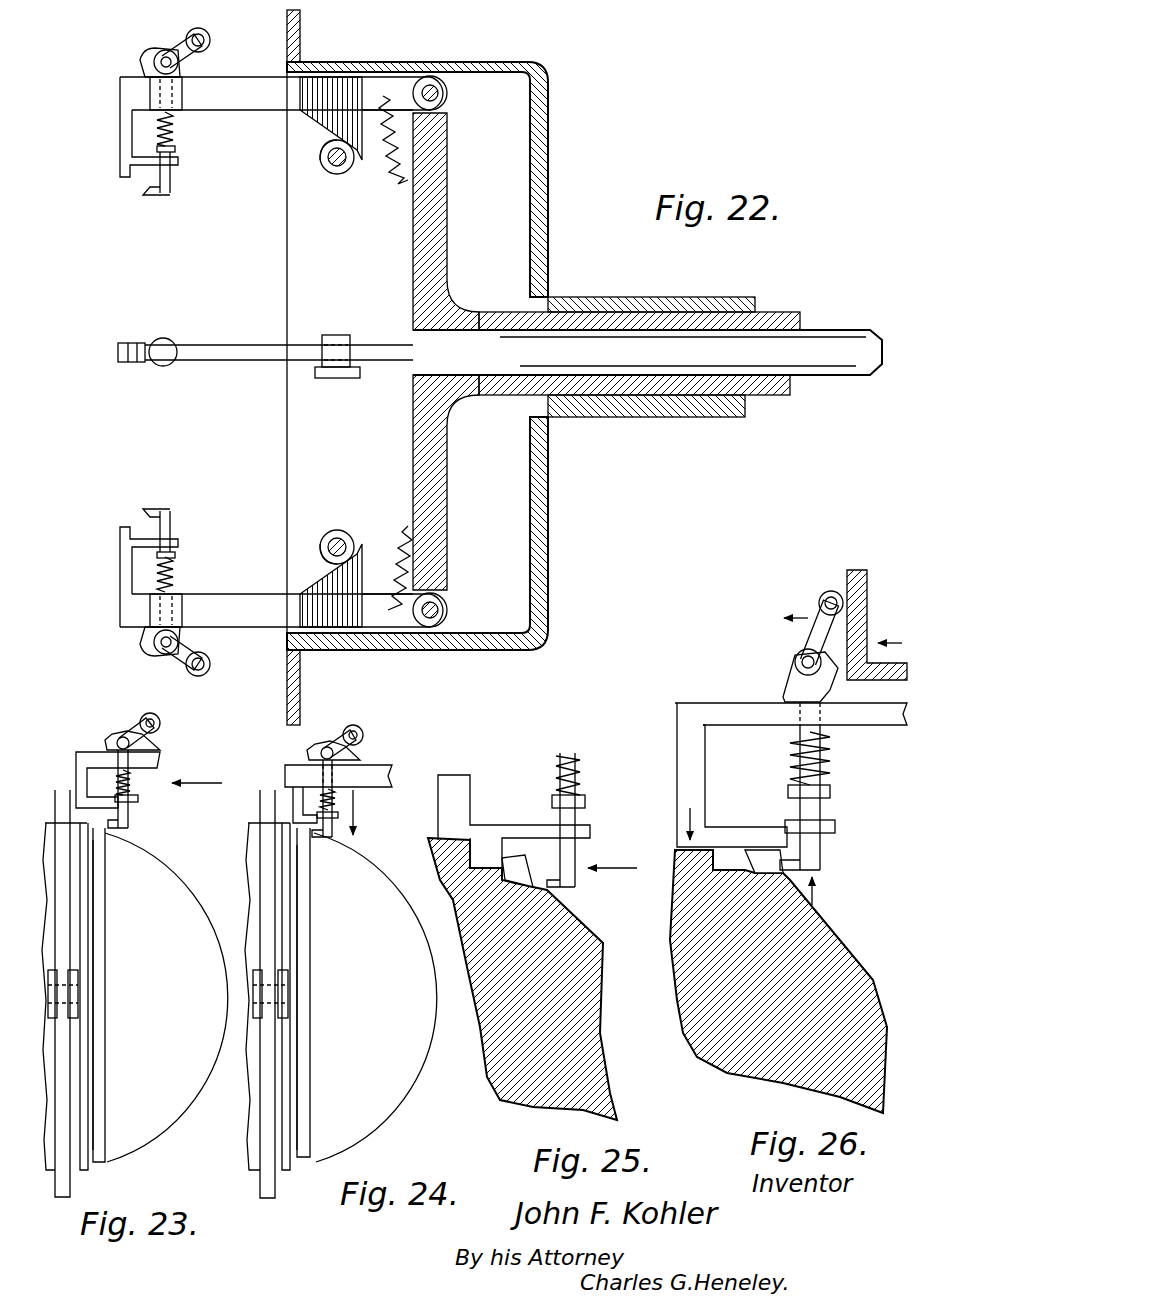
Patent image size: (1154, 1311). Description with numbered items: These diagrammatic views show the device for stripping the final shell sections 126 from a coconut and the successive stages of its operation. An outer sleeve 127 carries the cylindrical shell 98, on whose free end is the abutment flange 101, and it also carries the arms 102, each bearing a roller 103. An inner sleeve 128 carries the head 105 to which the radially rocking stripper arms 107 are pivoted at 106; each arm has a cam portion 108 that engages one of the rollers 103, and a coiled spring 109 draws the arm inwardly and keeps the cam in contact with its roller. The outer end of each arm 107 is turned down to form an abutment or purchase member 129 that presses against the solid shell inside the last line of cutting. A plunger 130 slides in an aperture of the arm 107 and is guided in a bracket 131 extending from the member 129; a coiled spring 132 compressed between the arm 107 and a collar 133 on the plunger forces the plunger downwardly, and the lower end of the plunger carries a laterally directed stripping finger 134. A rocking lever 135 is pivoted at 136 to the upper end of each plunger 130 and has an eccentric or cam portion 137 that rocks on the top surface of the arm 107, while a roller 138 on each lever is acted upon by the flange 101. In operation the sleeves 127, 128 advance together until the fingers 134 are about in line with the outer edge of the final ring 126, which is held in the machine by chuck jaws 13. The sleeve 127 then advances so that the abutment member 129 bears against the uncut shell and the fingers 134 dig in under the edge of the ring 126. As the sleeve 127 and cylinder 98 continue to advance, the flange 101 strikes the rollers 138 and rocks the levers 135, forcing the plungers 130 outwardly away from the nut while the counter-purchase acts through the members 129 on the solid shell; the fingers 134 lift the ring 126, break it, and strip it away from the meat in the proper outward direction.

In FIG. 23, the chuck jaws 13 is at (70, 1077).
In FIG. 24, the chuck jaws 13 is at (270, 876).
In FIG. 25, the chuck jaws 13 is at (522, 979).
In FIG. 26, the chuck jaws 13 is at (778, 981).
In FIG. 22, the cylindrical shell 98 is at (548, 496).
In FIG. 22, the abutment flange 101 is at (300, 36).
In FIG. 26, the abutment flange 101 is at (862, 565).
In FIG. 22, the arms 102 is at (318, 146).
In FIG. 22, the rollers 103 is at (346, 335).
In FIG. 22, the head 105 is at (448, 206).
In FIG. 22, the pivot points 106 is at (447, 96).
In FIG. 22, the stripper arms 107 is at (243, 380).
In FIG. 24, the stripper arms 107 is at (376, 775).
In FIG. 26, the stripper arms 107 is at (791, 715).
In FIG. 22, the cam portions 108 is at (300, 580).
In FIG. 22, the coiled springs 109 is at (398, 168).
In FIG. 23, the shell sections 126 is at (100, 904).
In FIG. 24, the shell sections 126 is at (305, 929).
In FIG. 25, the shell sections 126 is at (512, 871).
In FIG. 26, the shell sections 126 is at (760, 850).
In FIG. 22, the sleeve 127 is at (600, 297).
In FIG. 22, the inner sleeve 128 is at (773, 312).
In FIG. 22, the abutment or purchase member 129 is at (121, 178).
In FIG. 23, the abutment or purchase member 129 is at (90, 808).
In FIG. 24, the abutment or purchase member 129 is at (290, 815).
In FIG. 25, the abutment or purchase member 129 is at (455, 832).
In FIG. 26, the abutment or purchase member 129 is at (686, 845).
In FIG. 22, the plunger 130 is at (172, 180).
In FIG. 23, the plunger 130 is at (126, 789).
In FIG. 24, the plunger 130 is at (322, 798).
In FIG. 25, the plunger 130 is at (580, 850).
In FIG. 26, the plunger 130 is at (825, 806).
In FIG. 22, the bracket 131 is at (140, 153).
In FIG. 24, the bracket 131 is at (340, 830).
In FIG. 26, the bracket 131 is at (725, 822).
In FIG. 22, the coiled spring 132 is at (178, 136).
In FIG. 23, the coiled spring 132 is at (123, 782).
In FIG. 24, the coiled spring 132 is at (327, 799).
In FIG. 25, the coiled spring 132 is at (583, 781).
In FIG. 26, the coiled spring 132 is at (832, 770).
In FIG. 22, the collar 133 is at (178, 148).
In FIG. 22, the stripping tool or finger 134 is at (148, 197).
In FIG. 23, the stripping tool or finger 134 is at (130, 827).
In FIG. 25, the stripping tool or finger 134 is at (580, 886).
In FIG. 26, the stripping tool or finger 134 is at (832, 880).
In FIG. 22, the rocking lever 135 is at (182, 40).
In FIG. 23, the rocking lever 135 is at (160, 740).
In FIG. 24, the rocking lever 135 is at (342, 736).
In FIG. 26, the rocking lever 135 is at (812, 632).
In FIG. 22, the pivot 136 is at (160, 55).
In FIG. 26, the pivot 136 is at (795, 663).
In FIG. 22, the eccentric or cam portion 137 is at (138, 63).
In FIG. 23, the eccentric or cam portion 137 is at (104, 740).
In FIG. 24, the eccentric or cam portion 137 is at (308, 748).
In FIG. 26, the eccentric or cam portion 137 is at (783, 693).
In FIG. 22, the rollers 138 is at (211, 41).
In FIG. 23, the rollers 138 is at (152, 705).
In FIG. 24, the rollers 138 is at (360, 730).
In FIG. 26, the rollers 138 is at (821, 598).